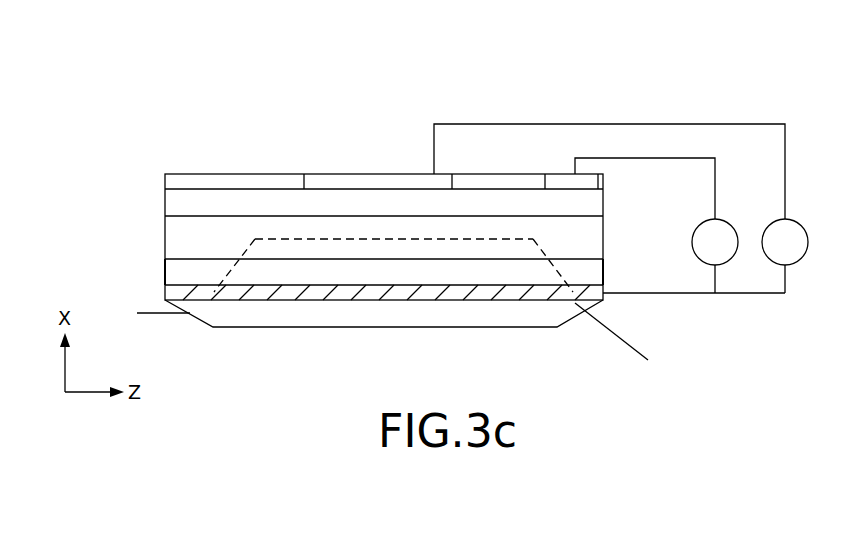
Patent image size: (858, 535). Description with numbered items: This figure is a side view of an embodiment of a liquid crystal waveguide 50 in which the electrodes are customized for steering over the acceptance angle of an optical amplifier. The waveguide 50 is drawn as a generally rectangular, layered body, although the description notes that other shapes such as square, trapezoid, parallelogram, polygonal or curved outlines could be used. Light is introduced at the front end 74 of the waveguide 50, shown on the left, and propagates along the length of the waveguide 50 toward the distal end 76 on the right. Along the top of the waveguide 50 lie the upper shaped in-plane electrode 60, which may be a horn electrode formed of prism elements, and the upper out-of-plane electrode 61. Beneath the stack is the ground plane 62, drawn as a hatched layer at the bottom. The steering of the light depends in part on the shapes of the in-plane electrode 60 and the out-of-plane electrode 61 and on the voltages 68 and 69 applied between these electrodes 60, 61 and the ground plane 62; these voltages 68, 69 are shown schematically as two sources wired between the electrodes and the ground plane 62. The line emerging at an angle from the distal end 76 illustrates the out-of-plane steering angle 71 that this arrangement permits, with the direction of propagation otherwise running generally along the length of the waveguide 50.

The waveguide 50 is at (662, 106).
The upper shaped in-plane electrode 60 is at (380, 174).
The upper out-of-plane electrode 61 is at (560, 174).
The ground plane 62 is at (292, 293).
The voltage 68 is at (797, 263).
The voltage 69 is at (725, 220).
The out-of-plane steering angle 71 is at (610, 330).
The front end 74 is at (162, 270).
The distal end 76 is at (606, 271).